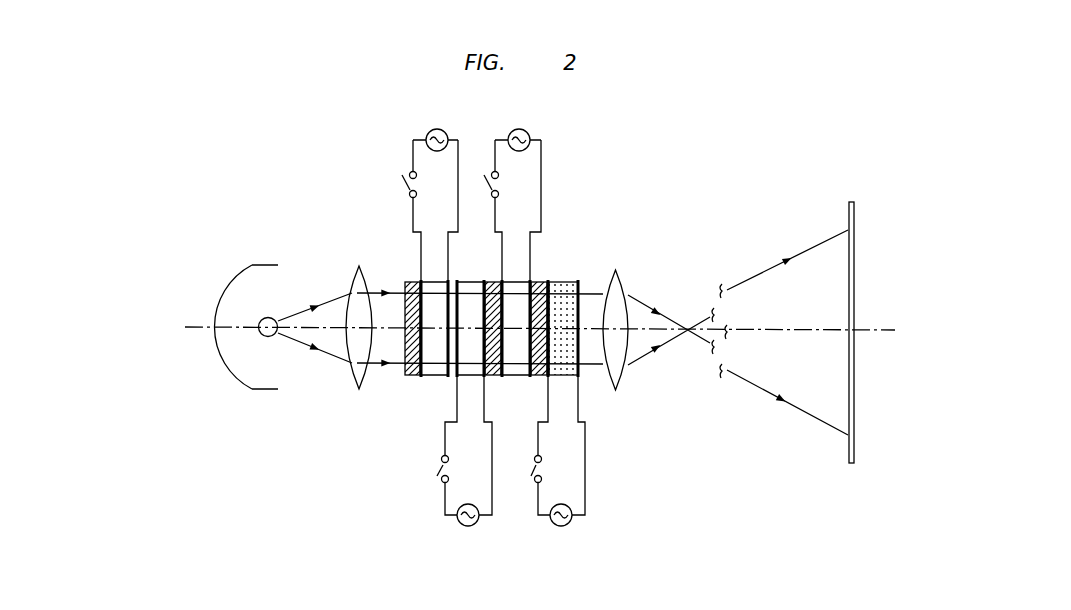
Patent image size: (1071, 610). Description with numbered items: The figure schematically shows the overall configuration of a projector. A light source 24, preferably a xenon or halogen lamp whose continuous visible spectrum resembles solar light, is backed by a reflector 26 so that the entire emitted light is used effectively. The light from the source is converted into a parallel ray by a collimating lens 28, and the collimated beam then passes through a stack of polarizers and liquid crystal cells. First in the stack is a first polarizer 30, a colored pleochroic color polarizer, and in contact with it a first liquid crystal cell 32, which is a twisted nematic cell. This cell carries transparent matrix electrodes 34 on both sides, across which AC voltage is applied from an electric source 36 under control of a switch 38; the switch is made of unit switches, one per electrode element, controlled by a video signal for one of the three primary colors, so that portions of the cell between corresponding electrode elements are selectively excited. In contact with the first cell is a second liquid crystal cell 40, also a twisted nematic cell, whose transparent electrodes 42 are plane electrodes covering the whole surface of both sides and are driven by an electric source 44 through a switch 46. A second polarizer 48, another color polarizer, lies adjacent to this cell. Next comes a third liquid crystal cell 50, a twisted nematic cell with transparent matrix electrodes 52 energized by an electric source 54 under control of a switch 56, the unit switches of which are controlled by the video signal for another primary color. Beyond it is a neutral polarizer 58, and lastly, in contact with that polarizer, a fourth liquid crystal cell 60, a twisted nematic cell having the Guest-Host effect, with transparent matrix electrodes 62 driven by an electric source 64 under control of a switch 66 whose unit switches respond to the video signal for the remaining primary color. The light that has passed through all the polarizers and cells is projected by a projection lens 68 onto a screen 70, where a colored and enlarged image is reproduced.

The light source 24 is at (284, 318).
The reflector 26 is at (231, 378).
The collimating lens 28 is at (352, 383).
The first polarizer 30 is at (410, 279).
The first liquid crystal cell 32 is at (434, 279).
The transparent matrix electrodes 34 is at (447, 378).
The electric source 36 is at (437, 128).
The switch 38 is at (402, 175).
The second liquid crystal cell 40 is at (469, 378).
The transparent electrodes 42 is at (485, 282).
The electric source 44 is at (467, 528).
The switch 46 is at (438, 481).
The second polarizer 48 is at (492, 378).
The third liquid crystal cell 50 is at (515, 280).
The transparent matrix electrodes 52 is at (529, 378).
The electric source 54 is at (520, 128).
The switch 56 is at (490, 177).
The neutral polarizer 58 is at (540, 282).
The fourth liquid crystal cell 60 is at (565, 378).
The transparent matrix electrodes 62 is at (578, 282).
The electric source 64 is at (560, 528).
The switch 66 is at (533, 481).
The projection lens 68 is at (620, 386).
The screen 70 is at (848, 212).